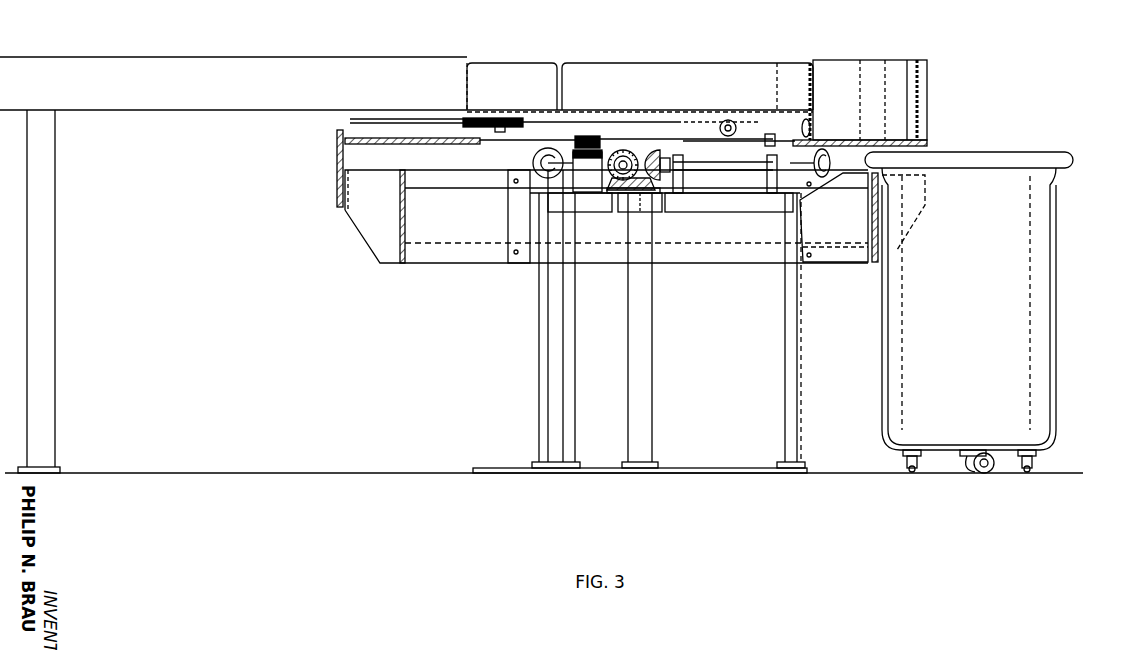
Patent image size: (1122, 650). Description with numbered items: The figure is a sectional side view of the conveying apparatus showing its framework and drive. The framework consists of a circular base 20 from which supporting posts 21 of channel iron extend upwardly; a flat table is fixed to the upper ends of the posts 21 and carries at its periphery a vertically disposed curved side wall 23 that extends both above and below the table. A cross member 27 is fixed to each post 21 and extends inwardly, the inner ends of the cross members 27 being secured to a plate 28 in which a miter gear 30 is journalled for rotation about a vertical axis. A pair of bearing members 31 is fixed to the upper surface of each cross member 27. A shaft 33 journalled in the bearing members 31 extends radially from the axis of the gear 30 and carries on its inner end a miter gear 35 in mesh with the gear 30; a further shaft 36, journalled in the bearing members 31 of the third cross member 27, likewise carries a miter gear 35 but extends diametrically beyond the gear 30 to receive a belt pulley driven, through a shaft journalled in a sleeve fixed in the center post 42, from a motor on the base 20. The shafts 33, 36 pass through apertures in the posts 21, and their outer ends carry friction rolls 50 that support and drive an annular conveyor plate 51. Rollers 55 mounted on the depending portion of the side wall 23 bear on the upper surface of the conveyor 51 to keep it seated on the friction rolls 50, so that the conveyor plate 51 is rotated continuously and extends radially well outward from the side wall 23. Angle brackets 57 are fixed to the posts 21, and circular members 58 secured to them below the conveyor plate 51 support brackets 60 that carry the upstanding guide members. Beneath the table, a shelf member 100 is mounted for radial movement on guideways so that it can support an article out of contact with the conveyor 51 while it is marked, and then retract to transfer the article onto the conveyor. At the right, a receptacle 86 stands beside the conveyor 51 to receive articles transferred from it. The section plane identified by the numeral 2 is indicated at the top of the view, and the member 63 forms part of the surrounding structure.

The section line 2- 2 is at (322, 117).
The circular base 20 is at (698, 467).
The supporting post 21 is at (540, 358).
The side wall 23 is at (815, 82).
The cross member 27 is at (586, 204).
The plate 28 is at (656, 200).
The miter gear 30 is at (640, 152).
The bearing member 31 is at (742, 183).
The shaft 33 is at (750, 139).
The miter gear 35 is at (660, 150).
The shaft 36 is at (587, 171).
The center post 42 is at (652, 390).
The friction roll 50 is at (532, 162).
The annular conveyor plate 51 is at (398, 144).
The roller 55 is at (730, 120).
The angle bracket 57 is at (519, 210).
The circular member 58 is at (406, 190).
The bracket 60 is at (381, 205).
The end plate 63 is at (336, 162).
The receptacle 86 is at (956, 312).
The shelf member 100 is at (414, 119).